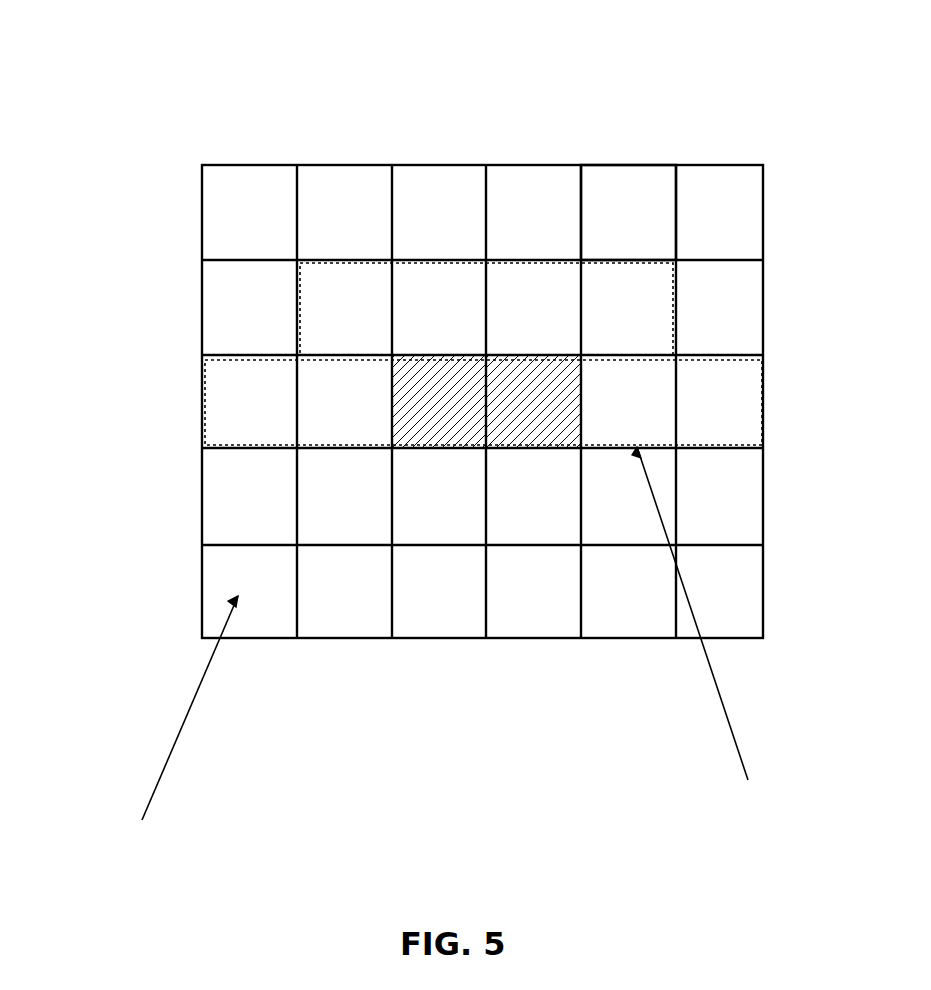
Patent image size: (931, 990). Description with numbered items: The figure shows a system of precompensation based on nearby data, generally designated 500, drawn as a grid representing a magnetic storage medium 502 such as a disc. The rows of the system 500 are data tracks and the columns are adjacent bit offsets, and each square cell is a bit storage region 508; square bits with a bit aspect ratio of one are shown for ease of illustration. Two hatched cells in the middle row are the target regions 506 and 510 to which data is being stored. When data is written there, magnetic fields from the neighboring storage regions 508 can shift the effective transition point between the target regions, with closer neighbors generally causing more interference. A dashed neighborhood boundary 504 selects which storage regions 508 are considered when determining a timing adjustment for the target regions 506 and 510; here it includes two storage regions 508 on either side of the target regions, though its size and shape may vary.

The system of precompensation based on nearby data 500 is at (136, 26).
The magnetic storage medium 502 is at (202, 165).
The neighborhood boundary 504 is at (300, 314).
The target region 506 is at (415, 370).
The storage region 508 is at (638, 177).
The target region 510 is at (503, 368).